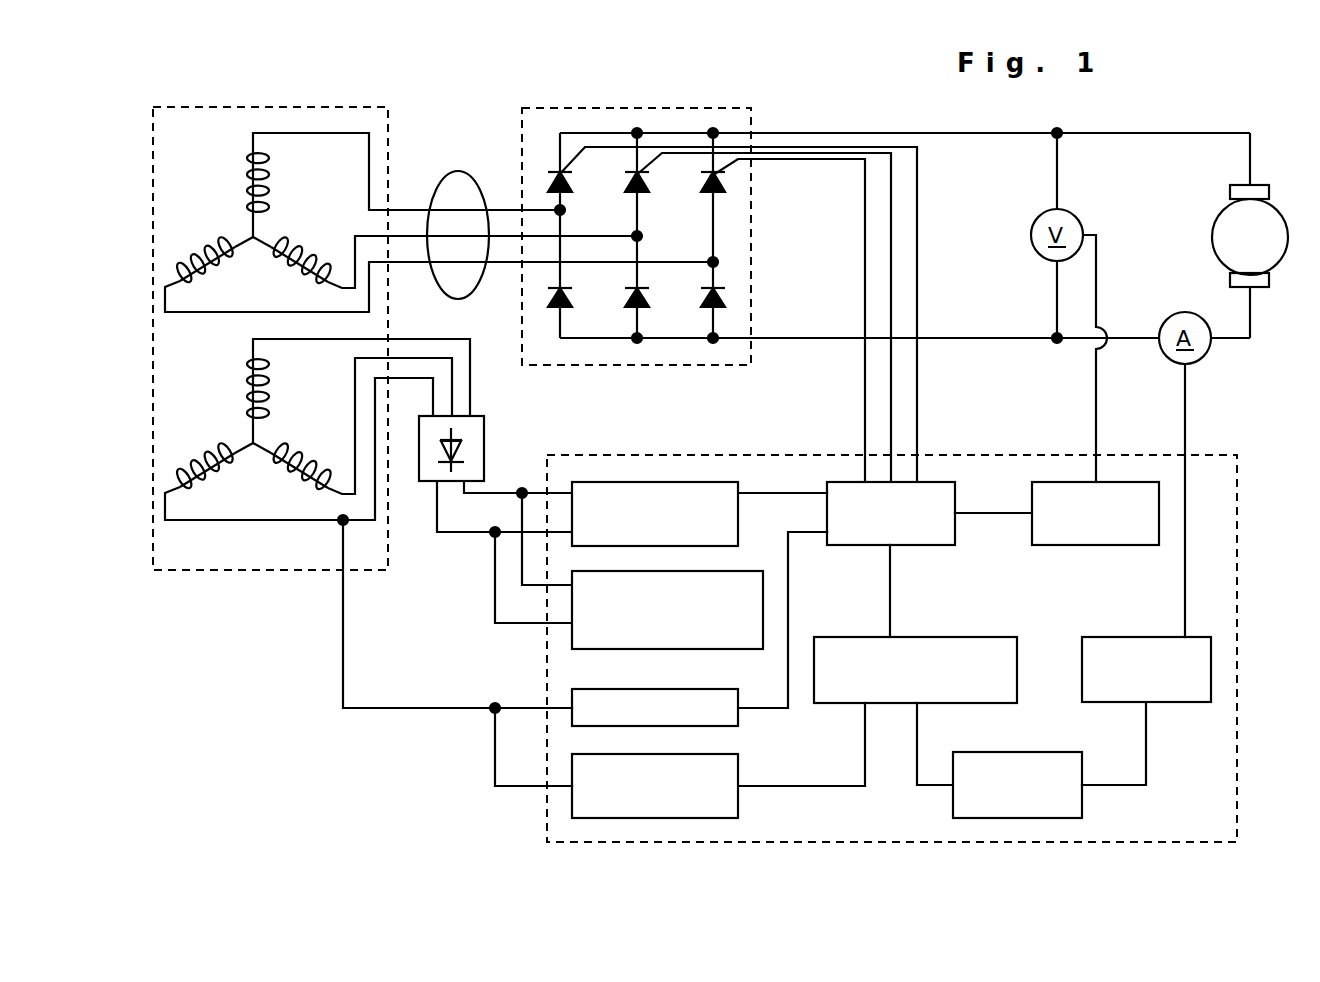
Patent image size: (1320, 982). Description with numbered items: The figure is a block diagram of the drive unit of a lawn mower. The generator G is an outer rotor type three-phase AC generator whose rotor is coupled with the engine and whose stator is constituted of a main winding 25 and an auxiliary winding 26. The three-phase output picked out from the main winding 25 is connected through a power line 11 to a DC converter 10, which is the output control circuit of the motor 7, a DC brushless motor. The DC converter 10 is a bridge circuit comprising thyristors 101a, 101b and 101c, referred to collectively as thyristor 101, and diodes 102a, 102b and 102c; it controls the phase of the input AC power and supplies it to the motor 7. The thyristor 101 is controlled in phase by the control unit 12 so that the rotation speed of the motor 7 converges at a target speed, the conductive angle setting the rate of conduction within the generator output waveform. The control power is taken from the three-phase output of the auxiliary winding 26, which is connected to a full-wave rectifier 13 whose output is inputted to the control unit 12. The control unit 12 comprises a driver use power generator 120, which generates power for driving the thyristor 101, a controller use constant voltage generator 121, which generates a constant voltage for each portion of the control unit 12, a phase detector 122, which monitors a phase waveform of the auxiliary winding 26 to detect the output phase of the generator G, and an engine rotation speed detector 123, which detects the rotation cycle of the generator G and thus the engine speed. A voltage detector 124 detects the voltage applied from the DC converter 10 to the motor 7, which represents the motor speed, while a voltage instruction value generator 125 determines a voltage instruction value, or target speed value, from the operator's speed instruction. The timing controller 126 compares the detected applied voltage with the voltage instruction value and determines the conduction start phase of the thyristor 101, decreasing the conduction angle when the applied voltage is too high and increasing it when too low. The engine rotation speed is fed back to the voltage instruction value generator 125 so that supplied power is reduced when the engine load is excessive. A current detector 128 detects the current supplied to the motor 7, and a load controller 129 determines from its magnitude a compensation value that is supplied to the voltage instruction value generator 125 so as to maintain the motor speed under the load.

The generator G is at (152, 472).
The main winding 25 is at (210, 147).
The auxiliary winding 26 is at (237, 495).
The power line 11 is at (458, 171).
The full-wave rectifier 13 is at (437, 485).
The DC converter 10 is at (555, 367).
The thyristor 101 is at (815, 68).
The thyristor 101a is at (580, 170).
The thyristor 101b is at (656, 170).
The thyristor 101c is at (732, 170).
The diode 102a is at (574, 298).
The diode 102b is at (650, 298).
The diode 102c is at (725, 298).
The motor 7 is at (1275, 206).
The control unit 12 is at (1237, 600).
The driver use power generator 120 is at (690, 546).
The controller use constant voltage generator 121 is at (700, 649).
The phase detector 122 is at (712, 726).
The engine rotation speed detector 123 is at (662, 818).
The voltage detector 124 is at (1065, 545).
The voltage instruction value generator 125 is at (982, 637).
The timing controller 126 is at (915, 545).
The current detector 128 is at (1185, 702).
The load controller 129 is at (1082, 806).